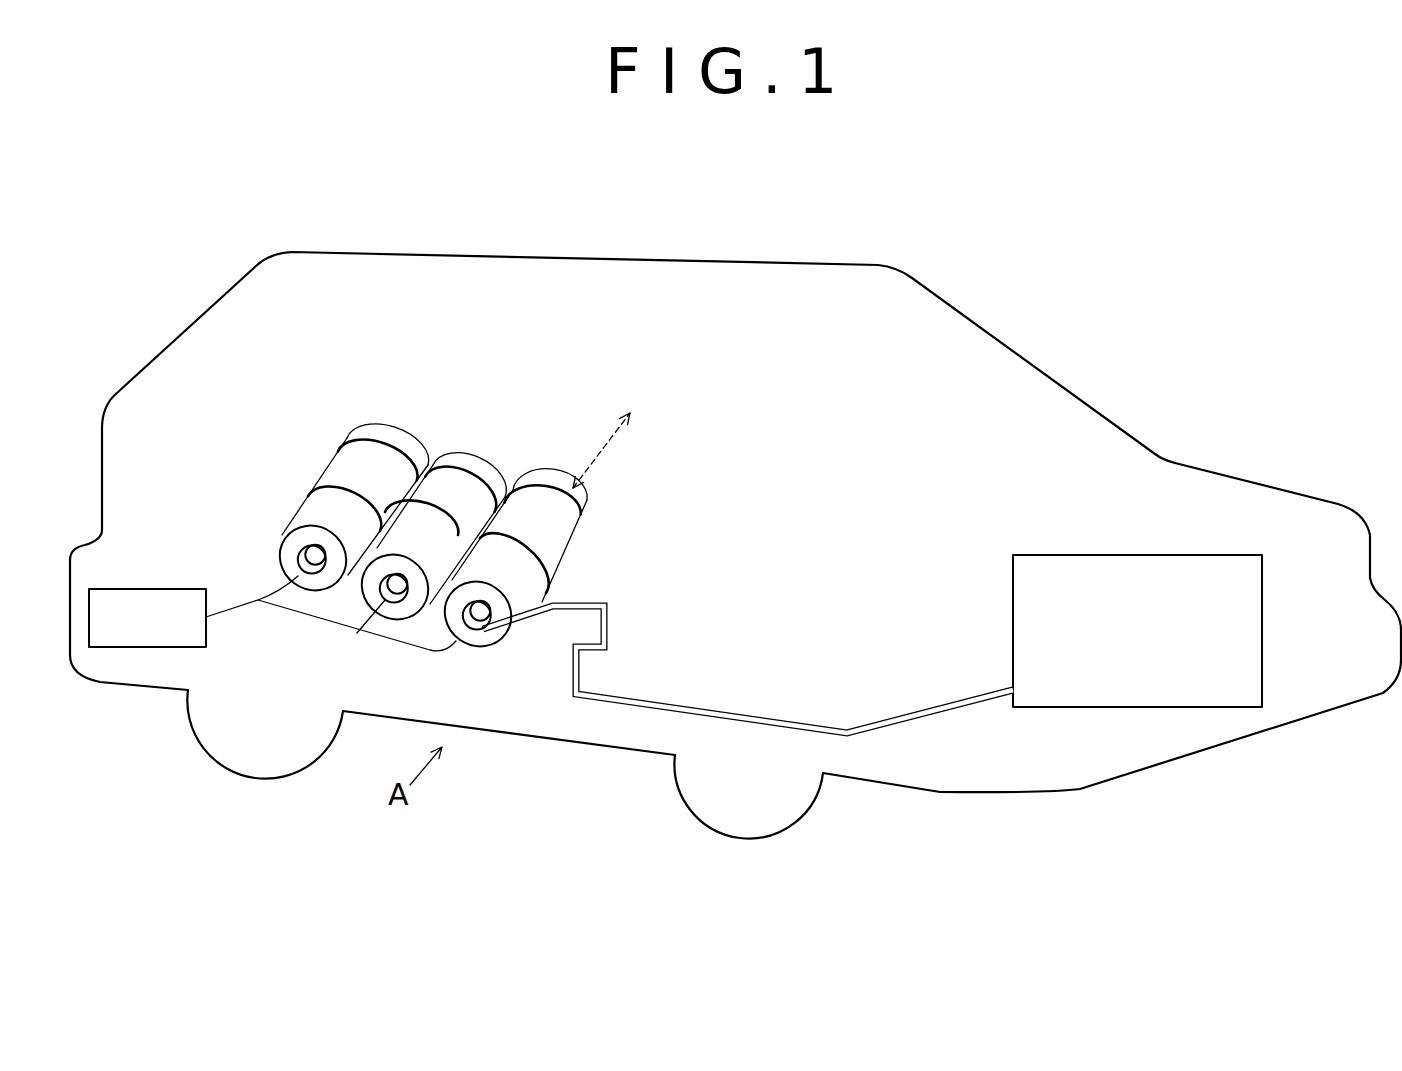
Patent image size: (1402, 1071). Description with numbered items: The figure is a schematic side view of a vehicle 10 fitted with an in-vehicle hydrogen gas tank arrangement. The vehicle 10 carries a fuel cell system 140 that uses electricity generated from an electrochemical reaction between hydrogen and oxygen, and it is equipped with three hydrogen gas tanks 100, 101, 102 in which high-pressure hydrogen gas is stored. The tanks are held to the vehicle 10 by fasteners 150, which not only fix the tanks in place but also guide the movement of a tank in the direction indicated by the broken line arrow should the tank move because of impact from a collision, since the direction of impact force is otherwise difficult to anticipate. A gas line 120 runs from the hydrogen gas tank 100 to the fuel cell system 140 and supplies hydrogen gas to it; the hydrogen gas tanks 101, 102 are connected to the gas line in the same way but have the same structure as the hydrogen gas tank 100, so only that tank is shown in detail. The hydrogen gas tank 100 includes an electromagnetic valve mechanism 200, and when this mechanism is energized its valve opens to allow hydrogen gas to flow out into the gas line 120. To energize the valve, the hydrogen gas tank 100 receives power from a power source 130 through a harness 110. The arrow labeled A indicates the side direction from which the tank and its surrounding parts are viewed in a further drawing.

The vehicle 10 is at (1062, 272).
The hydrogen gas tank 100 is at (535, 580).
The hydrogen gas tank 101 is at (452, 552).
The hydrogen gas tank 102 is at (370, 520).
The harness 110 is at (398, 650).
The gas line 120 is at (592, 603).
The power source 130 is at (148, 588).
The fuel cell system 140 is at (1099, 555).
The fastener 150 is at (583, 545).
The electromagnetic valve mechanism 200 is at (482, 630).